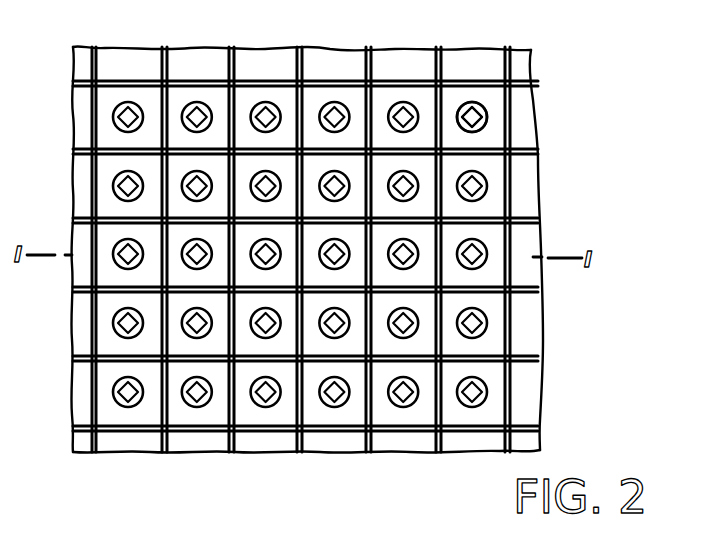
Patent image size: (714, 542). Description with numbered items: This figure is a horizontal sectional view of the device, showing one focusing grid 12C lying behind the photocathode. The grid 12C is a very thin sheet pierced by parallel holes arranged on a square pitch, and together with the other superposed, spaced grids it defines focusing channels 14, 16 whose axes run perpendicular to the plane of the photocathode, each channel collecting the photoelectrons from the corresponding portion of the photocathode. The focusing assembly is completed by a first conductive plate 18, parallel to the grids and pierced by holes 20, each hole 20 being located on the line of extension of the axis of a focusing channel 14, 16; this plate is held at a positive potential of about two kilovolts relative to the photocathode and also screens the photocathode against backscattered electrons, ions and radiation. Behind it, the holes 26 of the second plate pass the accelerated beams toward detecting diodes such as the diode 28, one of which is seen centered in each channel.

The focusing grid 12C is at (517, 88).
The focusing channel 14 is at (142, 90).
The focusing channel 16 is at (192, 232).
The first conductive plate 18 is at (522, 135).
The hole 20 is at (473, 113).
The hole 26 is at (525, 66).
The detecting diode 28 is at (397, 110).